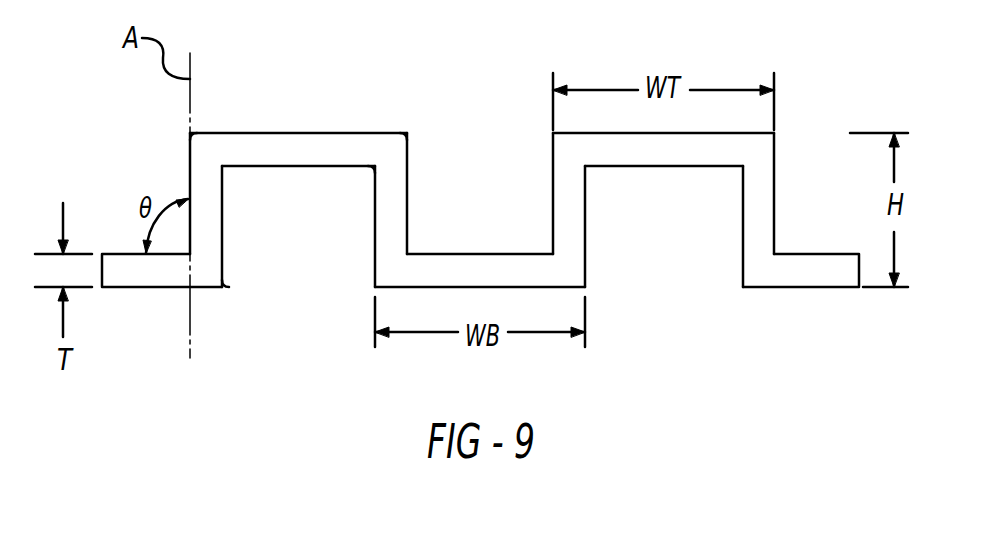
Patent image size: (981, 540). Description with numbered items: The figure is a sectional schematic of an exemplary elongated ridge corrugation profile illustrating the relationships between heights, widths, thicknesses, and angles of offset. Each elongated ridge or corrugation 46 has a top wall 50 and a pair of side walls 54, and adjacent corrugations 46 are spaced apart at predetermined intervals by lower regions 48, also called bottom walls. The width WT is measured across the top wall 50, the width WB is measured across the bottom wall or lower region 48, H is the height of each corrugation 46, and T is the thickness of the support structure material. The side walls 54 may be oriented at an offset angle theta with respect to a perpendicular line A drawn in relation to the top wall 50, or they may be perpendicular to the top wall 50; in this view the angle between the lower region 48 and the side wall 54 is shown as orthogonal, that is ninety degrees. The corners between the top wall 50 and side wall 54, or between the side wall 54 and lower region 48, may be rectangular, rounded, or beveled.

The top wall 50 is at (292, 133).
The elongated ridge or corrugation 46 is at (407, 133).
The lower region or bottom wall 48 is at (463, 254).
The side wall 54 is at (222, 218).